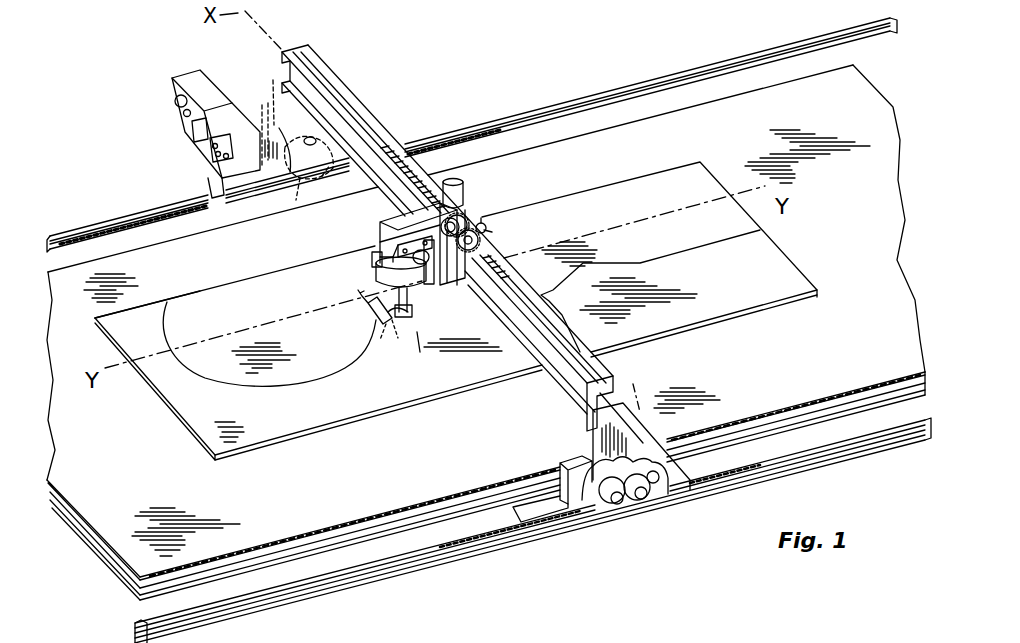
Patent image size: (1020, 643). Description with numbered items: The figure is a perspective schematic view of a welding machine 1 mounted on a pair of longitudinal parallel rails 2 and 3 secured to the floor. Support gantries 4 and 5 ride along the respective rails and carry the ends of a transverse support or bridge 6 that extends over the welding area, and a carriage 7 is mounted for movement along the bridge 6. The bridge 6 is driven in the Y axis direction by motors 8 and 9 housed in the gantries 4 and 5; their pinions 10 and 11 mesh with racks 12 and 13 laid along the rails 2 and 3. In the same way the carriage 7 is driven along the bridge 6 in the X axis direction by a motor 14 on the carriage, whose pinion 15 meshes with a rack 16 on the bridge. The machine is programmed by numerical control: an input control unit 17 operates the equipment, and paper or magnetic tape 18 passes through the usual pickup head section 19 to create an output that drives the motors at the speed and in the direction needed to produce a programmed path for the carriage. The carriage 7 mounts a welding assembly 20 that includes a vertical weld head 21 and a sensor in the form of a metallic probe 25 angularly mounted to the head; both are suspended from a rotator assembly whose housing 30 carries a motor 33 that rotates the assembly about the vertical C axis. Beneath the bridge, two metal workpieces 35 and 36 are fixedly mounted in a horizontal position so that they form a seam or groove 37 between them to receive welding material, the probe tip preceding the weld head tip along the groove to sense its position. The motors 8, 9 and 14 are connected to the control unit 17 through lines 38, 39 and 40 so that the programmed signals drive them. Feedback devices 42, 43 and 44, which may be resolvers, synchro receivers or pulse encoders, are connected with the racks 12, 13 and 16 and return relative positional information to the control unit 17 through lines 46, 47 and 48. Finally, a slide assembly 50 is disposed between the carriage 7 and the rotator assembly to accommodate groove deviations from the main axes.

The welding machine 1 is at (439, 82).
The rail 2 is at (647, 80).
The rail 3 is at (843, 453).
The support gantry 4 is at (275, 137).
The support gantry 5 is at (632, 427).
The bridge 6 is at (356, 94).
The carriage 7 is at (378, 222).
The motor 8 is at (306, 170).
The motor 9 is at (604, 503).
The pinion 10 is at (273, 80).
The pinion 11 is at (618, 506).
The rack 12 is at (432, 146).
The rack 13 is at (711, 483).
The motor 14 is at (476, 214).
The pinion 15 is at (445, 227).
The rack 16 is at (398, 165).
The input control unit 17 is at (215, 122).
The tape 18 is at (176, 108).
The pickup head section 19 is at (186, 124).
The welding assembly 20 is at (362, 315).
The weld head 21 is at (409, 320).
The probe 25 is at (378, 345).
The housing 30 is at (410, 270).
The motor 33 is at (434, 282).
The workpiece 35 is at (198, 298).
The workpiece 36 is at (411, 392).
The groove 37 is at (694, 248).
The line 38 is at (283, 170).
The line 39 is at (592, 486).
The line 40 is at (484, 214).
The feedback device 42 is at (332, 173).
The feedback device 43 is at (641, 500).
The feedback device 44 is at (490, 229).
The line 46 is at (309, 137).
The line 47 is at (656, 478).
The line 48 is at (490, 238).
The slide assembly 50 is at (368, 238).